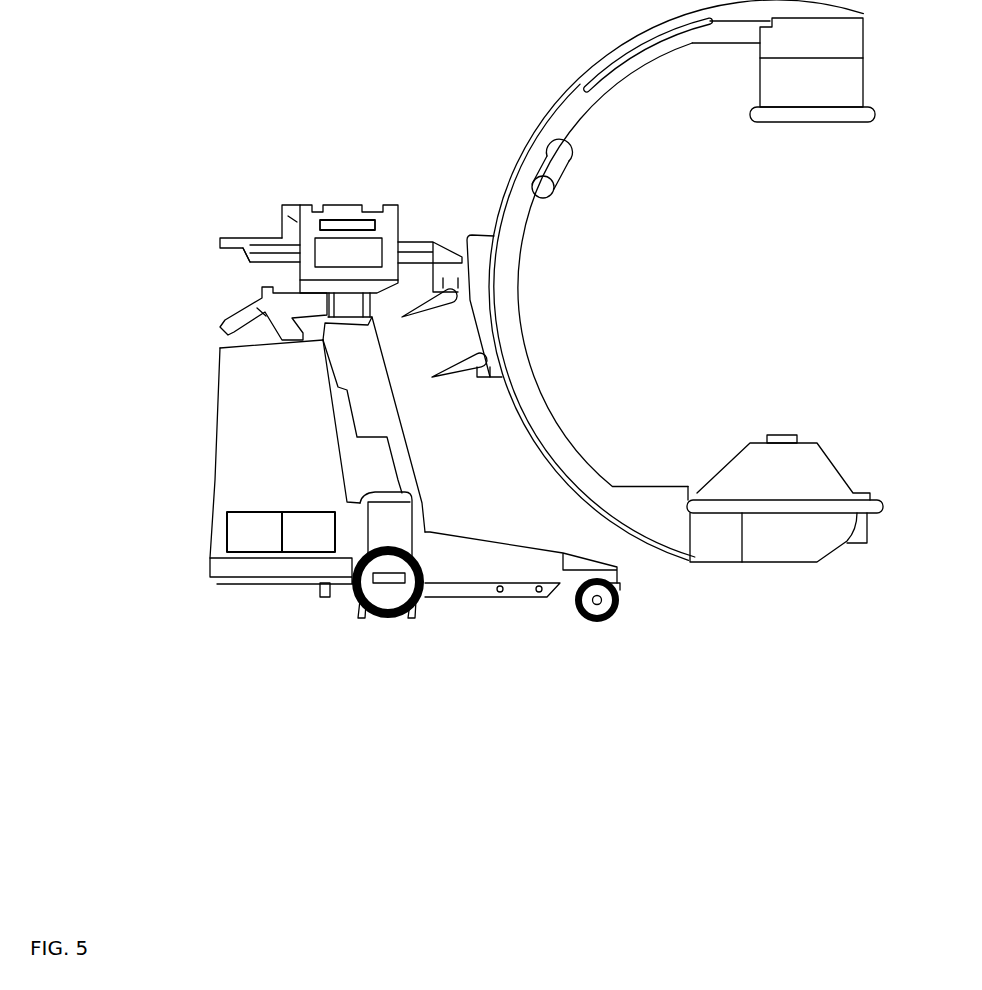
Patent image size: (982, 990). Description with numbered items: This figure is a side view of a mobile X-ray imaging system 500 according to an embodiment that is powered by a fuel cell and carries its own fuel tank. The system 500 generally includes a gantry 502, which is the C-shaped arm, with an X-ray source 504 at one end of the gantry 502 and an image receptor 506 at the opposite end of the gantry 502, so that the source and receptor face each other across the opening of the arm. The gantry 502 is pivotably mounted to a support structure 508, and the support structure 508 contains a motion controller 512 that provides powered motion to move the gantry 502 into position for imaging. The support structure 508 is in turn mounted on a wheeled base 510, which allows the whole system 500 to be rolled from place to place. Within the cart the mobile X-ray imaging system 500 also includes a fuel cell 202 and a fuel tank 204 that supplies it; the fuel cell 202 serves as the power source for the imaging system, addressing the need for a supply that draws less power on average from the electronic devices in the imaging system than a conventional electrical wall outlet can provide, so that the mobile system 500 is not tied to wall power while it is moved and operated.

The mobile X-ray imaging system 500 is at (738, 883).
The gantry 502 is at (547, 110).
The X-ray source 504 is at (737, 472).
The image receptor 506 is at (812, 115).
The support structure 508 is at (342, 208).
The wheeled base 510 is at (240, 392).
The motion controller 512 is at (380, 223).
The fuel cell 202 is at (227, 532).
The fuel tank 204 is at (298, 530).